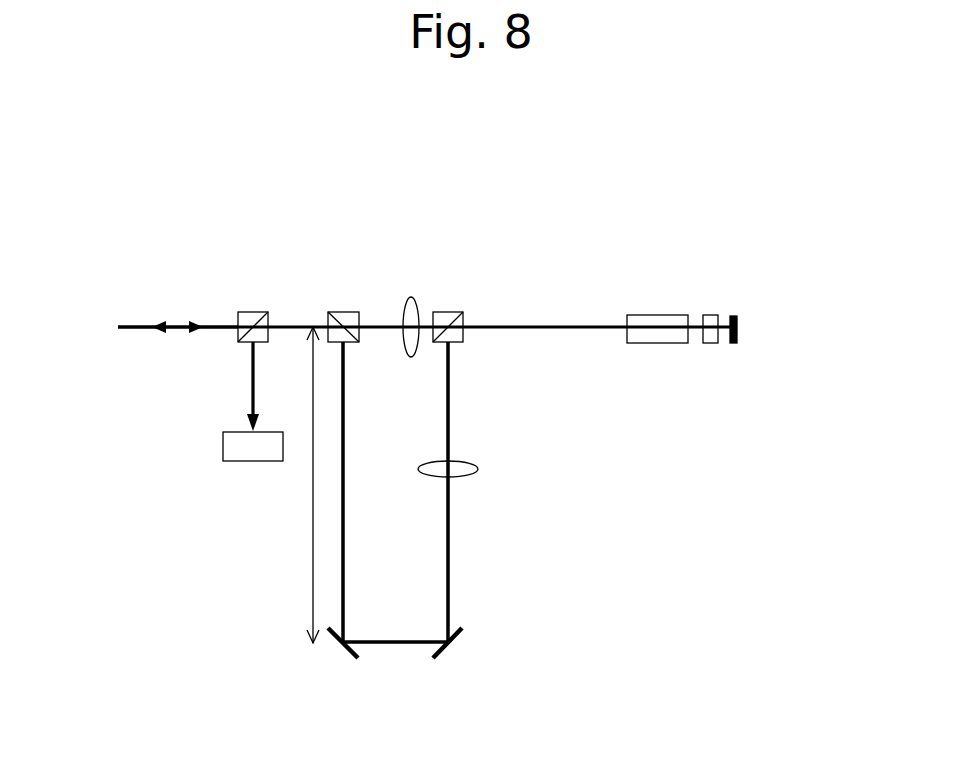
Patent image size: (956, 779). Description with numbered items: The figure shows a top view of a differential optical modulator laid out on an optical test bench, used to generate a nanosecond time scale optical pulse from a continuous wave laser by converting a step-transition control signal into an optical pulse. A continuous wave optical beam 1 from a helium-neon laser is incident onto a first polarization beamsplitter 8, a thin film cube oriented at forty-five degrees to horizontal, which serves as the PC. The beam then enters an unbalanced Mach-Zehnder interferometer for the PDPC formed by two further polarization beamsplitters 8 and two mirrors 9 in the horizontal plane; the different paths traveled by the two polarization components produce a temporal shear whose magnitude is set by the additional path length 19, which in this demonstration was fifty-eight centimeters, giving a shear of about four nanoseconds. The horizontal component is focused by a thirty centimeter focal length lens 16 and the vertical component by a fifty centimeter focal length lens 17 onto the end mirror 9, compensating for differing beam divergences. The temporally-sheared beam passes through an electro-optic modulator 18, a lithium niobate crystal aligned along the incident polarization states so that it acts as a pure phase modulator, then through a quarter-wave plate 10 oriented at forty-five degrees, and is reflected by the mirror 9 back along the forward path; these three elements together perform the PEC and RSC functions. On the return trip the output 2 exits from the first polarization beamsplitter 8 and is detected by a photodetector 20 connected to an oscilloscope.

The continuous wave optical beam 1 is at (132, 326).
The output 2 is at (251, 388).
The polarization beamsplitter 8 is at (247, 312).
The mirror 9 is at (448, 655).
The quarter-wave plate 10 is at (718, 343).
The lens 16 is at (408, 358).
The lens 17 is at (478, 469).
The electro-optic modulator 18 is at (643, 314).
The additional path length 19 is at (313, 568).
The photodetector 20 is at (237, 462).